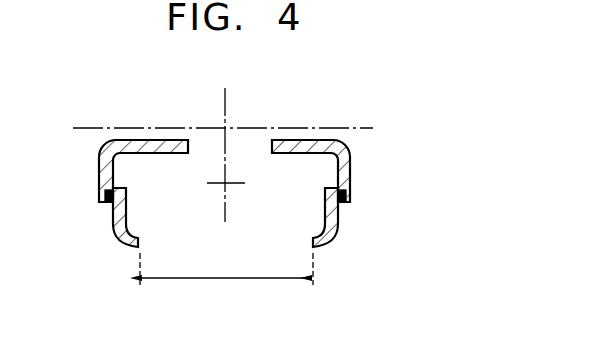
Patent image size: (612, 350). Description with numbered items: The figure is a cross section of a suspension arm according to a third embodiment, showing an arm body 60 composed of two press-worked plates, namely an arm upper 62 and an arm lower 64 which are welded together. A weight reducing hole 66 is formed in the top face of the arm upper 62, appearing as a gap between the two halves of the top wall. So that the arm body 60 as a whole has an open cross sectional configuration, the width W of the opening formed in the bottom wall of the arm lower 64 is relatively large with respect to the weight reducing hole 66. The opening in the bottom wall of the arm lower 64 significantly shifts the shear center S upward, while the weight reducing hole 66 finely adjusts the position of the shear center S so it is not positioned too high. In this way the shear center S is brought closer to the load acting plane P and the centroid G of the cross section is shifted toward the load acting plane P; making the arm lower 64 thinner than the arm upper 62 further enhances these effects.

The arm body 60 is at (274, 193).
The arm upper 62 is at (350, 183).
The arm lower 64 is at (342, 213).
The weight reducing hole 66 is at (260, 148).
The load acting plane P is at (355, 126).
The shear center S is at (225, 127).
The centroid of cross section G is at (225, 185).
The width of opening W is at (207, 278).